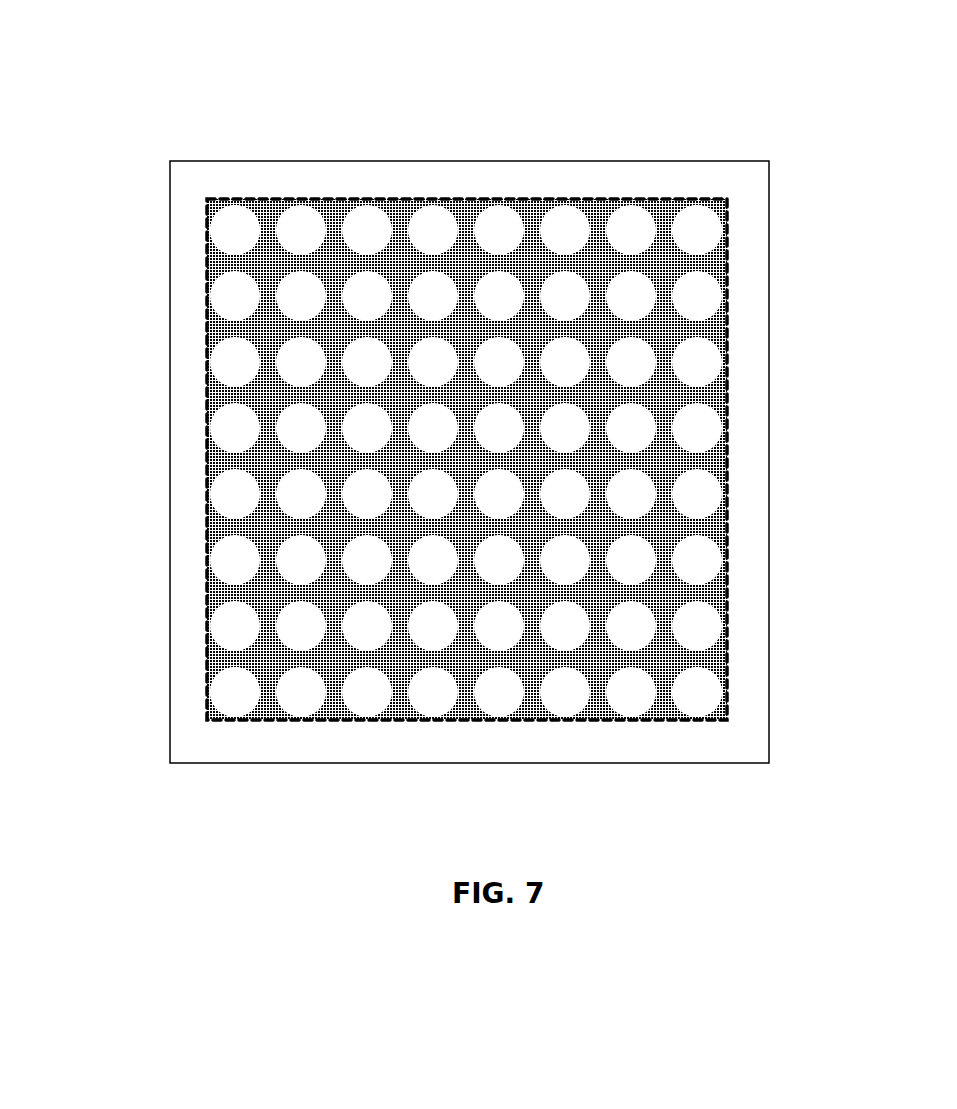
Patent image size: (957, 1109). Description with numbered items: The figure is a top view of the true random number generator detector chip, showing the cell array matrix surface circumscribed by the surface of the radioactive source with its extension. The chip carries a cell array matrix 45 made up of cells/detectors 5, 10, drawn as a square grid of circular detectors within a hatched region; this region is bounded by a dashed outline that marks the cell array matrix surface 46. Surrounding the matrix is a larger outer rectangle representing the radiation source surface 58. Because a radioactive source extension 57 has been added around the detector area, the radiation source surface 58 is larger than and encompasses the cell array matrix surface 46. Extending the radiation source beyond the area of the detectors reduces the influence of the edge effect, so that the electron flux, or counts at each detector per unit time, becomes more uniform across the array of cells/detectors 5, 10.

The detector 5 is at (707, 362).
The cell 10 is at (702, 243).
The cell array matrix 45 is at (405, 217).
The cell array matrix surface 46 is at (660, 197).
The radioactive source extension 57 is at (750, 743).
The radiation source surface 58 is at (769, 575).